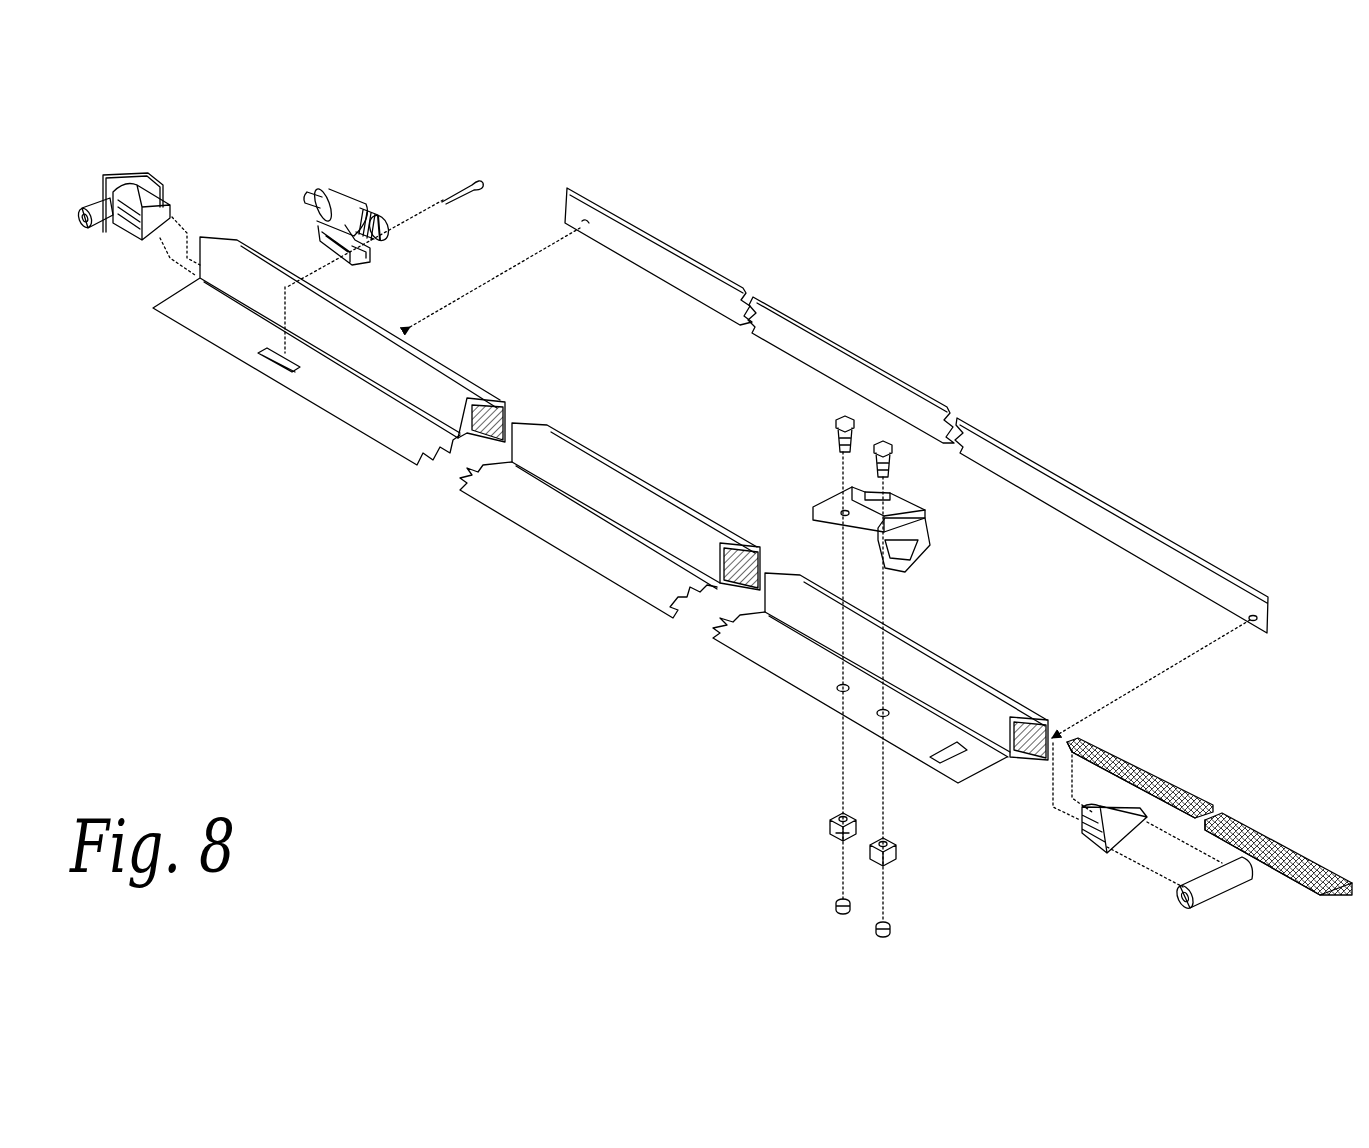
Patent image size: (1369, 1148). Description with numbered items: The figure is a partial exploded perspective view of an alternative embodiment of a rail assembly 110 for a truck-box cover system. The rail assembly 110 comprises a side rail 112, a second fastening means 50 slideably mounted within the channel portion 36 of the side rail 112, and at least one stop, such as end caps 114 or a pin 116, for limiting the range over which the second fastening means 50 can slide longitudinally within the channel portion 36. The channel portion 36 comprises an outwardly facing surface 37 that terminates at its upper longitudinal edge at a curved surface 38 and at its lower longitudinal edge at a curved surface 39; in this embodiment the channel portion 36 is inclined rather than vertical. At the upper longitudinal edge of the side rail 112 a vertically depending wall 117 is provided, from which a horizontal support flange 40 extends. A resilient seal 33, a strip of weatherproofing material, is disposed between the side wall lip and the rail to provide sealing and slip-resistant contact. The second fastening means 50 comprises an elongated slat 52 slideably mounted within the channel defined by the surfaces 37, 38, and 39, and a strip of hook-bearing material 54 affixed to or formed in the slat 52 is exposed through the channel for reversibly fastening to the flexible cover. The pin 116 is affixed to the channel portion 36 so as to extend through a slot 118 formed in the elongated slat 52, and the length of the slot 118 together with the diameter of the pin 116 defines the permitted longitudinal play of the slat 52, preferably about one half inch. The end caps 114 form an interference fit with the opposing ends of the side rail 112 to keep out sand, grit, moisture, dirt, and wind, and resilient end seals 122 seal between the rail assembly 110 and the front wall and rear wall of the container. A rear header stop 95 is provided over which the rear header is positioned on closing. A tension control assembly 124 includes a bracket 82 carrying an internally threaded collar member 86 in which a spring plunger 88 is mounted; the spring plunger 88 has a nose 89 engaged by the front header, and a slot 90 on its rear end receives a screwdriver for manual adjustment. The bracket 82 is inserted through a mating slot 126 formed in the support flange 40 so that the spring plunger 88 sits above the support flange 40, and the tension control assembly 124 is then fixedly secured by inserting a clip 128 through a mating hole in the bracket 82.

The seal 33 is at (668, 255).
The channel portion 36 is at (927, 662).
The outwardly facing surface 37 is at (458, 373).
The curved surface 38 is at (460, 437).
The curved surface 39 is at (500, 402).
The support flange 40 is at (597, 540).
The second fastening means 50 is at (1209, 828).
The elongated slat 52 is at (1352, 890).
The strip of hook-bearing material 54 is at (1280, 847).
The bracket 82 is at (316, 228).
The internally threaded collar member 86 is at (347, 202).
The spring plunger 88 is at (377, 220).
The nose 89 is at (312, 192).
The slot 90 is at (388, 227).
The rear header stop 95 is at (917, 500).
The rail assembly 110 is at (850, 227).
The side rail 112 is at (652, 477).
The end caps 114 is at (160, 197).
The pin 116 is at (307, 297).
The vertically depending wall 117 is at (673, 592).
The slot 118 is at (1167, 782).
The end seals 122 is at (100, 232).
The tension control assembly 124 is at (395, 194).
The mating slot 126 is at (287, 367).
The clip 128 is at (472, 178).